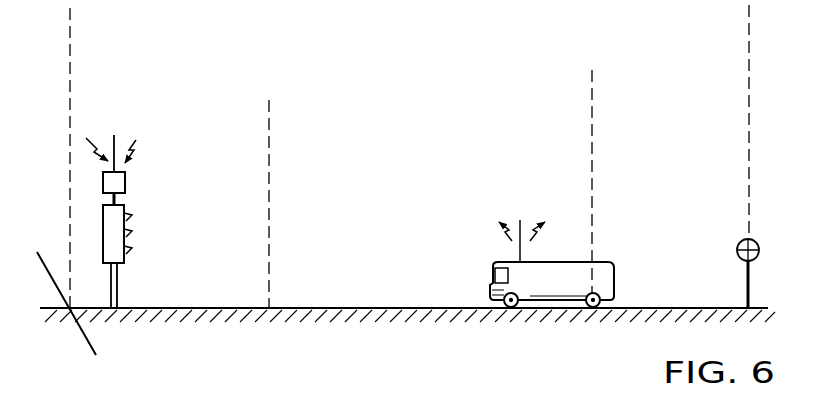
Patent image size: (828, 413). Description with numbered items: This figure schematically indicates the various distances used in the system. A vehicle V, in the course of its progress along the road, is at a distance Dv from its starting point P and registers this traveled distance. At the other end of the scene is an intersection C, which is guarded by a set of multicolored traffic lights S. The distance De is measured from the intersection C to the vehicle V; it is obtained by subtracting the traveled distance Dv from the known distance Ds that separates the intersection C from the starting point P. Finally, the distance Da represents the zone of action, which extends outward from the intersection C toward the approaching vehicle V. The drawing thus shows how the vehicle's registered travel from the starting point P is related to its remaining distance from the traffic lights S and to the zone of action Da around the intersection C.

The set of multicolored traffic lights S is at (131, 185).
The vehicle V is at (606, 263).
The starting point P is at (757, 245).
The intersection C is at (66, 303).
The known distance separating the intersection from the starting point Ds is at (749, 47).
The distance measured from the intersection De is at (590, 84).
The distance traveled from the starting point Dv is at (749, 84).
The zone of action Da is at (269, 115).